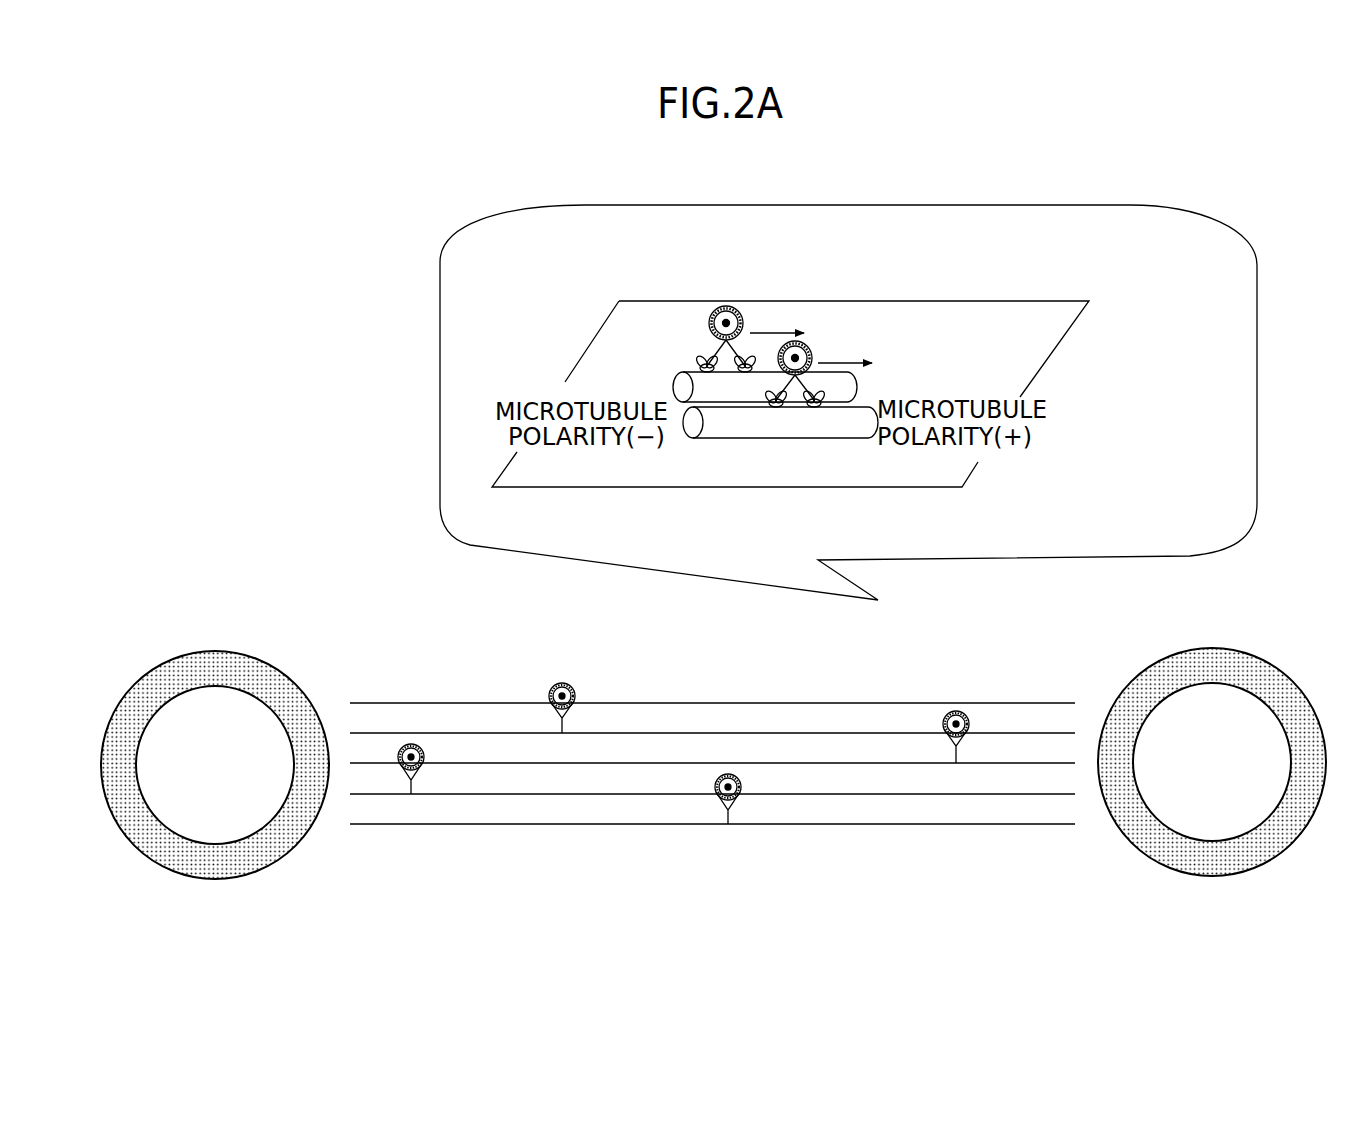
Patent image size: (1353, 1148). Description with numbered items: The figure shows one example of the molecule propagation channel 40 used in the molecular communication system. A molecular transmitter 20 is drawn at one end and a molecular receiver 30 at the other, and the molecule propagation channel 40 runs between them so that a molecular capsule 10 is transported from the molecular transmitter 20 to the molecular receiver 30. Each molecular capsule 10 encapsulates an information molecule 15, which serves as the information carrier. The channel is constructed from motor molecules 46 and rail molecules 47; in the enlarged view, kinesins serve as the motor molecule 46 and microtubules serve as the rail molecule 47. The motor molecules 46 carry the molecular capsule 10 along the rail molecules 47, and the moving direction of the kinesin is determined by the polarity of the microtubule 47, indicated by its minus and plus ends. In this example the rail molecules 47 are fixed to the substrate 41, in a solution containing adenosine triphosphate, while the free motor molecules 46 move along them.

The molecular capsule 10 is at (808, 345).
The information molecule 15 is at (800, 357).
The molecular transmitter 20 is at (153, 667).
The molecular receiver 30 is at (1150, 666).
The molecule propagation channel 40 is at (472, 853).
The substrate 41 is at (1030, 362).
The motor molecule 46 is at (965, 740).
The rail molecule 47 is at (808, 432).